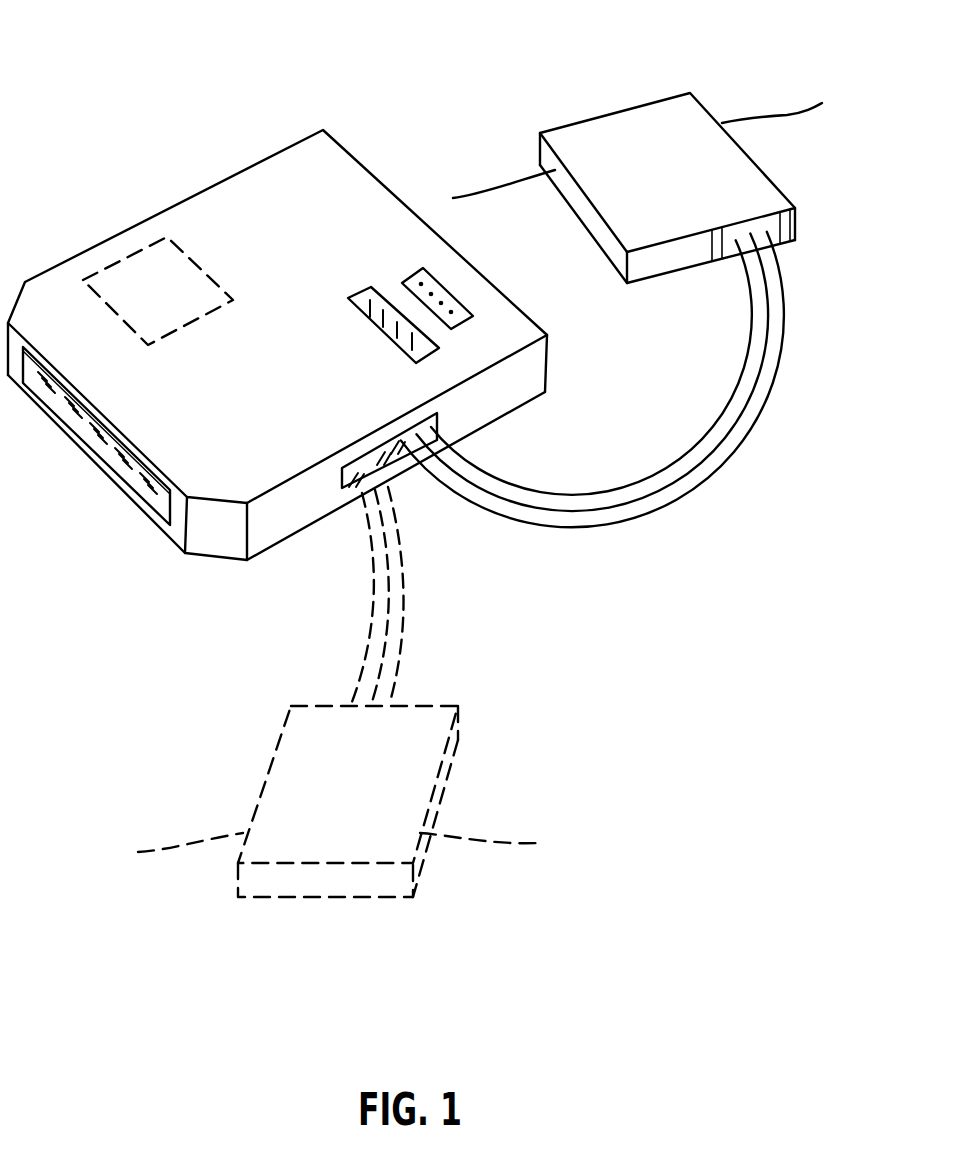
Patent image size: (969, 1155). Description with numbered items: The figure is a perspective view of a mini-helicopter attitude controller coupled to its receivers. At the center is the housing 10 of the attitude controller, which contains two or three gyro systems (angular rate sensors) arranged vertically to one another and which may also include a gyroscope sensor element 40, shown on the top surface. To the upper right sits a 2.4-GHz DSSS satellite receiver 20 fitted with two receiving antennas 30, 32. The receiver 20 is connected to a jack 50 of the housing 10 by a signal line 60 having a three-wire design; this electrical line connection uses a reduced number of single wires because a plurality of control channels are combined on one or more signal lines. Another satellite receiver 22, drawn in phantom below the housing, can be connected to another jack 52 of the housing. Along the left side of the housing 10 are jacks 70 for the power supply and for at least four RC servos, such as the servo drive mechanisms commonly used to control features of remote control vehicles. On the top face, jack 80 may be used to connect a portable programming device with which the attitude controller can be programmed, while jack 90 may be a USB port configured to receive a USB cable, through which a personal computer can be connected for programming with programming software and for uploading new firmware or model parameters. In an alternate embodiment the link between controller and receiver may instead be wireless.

The housing 10 is at (277, 310).
The satellite receiver 20 is at (667, 153).
The another satellite receiver 22 is at (338, 801).
The receiving antenna 30 is at (504, 134).
The receiving antenna 32 is at (772, 63).
The gyroscope sensor element 40 is at (158, 238).
The jack 50 is at (389, 410).
The another jack 52 is at (351, 531).
The cable 60 is at (592, 416).
The jacks 70 is at (96, 451).
The jack 80 is at (466, 323).
The jack 90 is at (484, 277).